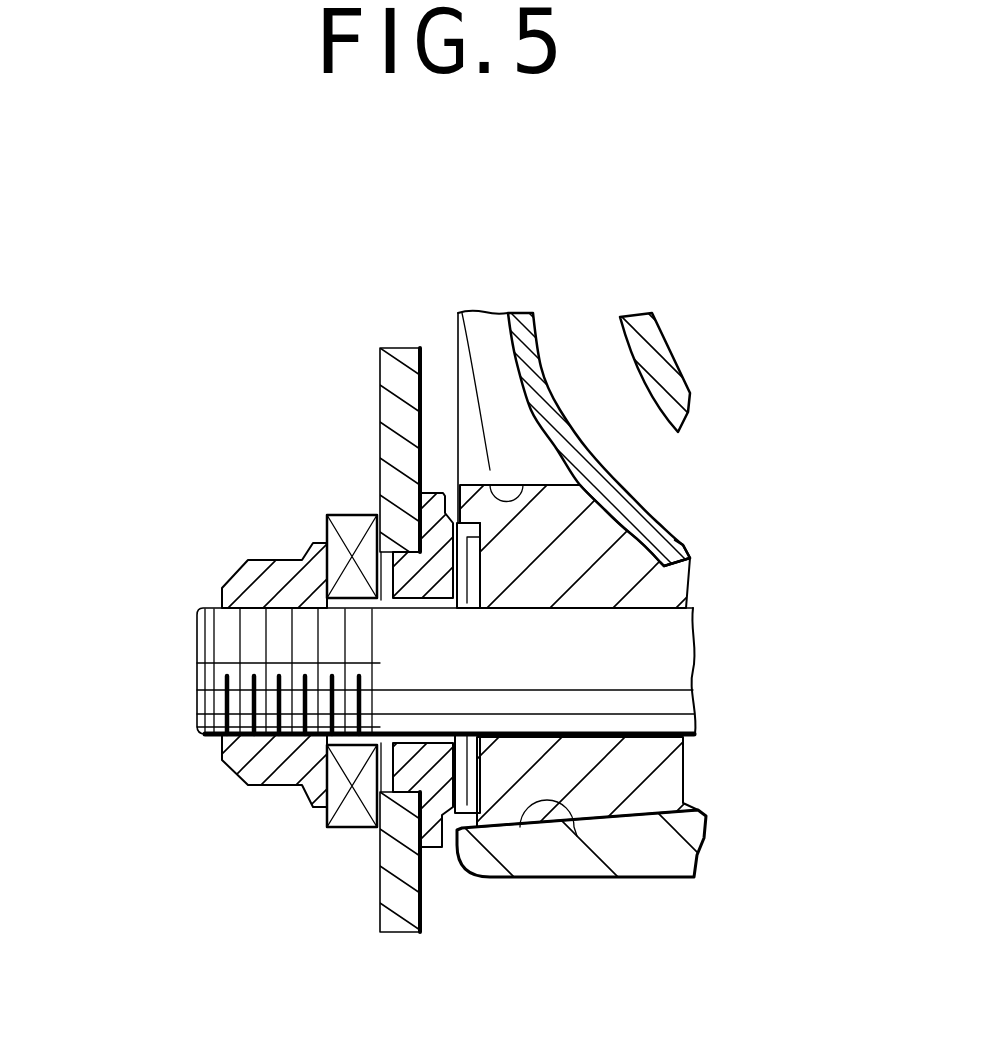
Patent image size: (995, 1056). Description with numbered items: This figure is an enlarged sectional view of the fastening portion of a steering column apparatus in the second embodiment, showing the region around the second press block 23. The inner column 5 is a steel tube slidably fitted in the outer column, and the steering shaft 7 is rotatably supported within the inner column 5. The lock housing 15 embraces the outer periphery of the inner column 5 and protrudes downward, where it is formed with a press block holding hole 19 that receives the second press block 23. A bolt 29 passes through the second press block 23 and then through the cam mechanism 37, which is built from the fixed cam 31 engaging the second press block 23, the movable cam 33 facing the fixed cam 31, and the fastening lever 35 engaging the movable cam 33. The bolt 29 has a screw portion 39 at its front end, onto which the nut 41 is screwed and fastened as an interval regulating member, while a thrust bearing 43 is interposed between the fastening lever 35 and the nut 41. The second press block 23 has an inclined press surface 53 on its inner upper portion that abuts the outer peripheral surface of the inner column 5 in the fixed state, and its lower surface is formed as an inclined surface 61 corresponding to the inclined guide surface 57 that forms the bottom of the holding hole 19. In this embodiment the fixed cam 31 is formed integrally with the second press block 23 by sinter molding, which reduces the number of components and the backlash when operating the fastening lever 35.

The inner column 5 is at (652, 512).
The steering shaft 7 is at (660, 365).
The lock housing 15 is at (493, 363).
The press block holding hole 19 is at (458, 313).
The second press block 23 is at (645, 772).
The bolt 29 is at (667, 660).
The fixed cam 31 is at (452, 822).
The movable cam 33 is at (430, 765).
The fastening lever 35 is at (378, 905).
The cam mechanism 37 is at (228, 900).
The screw portion 39 is at (258, 653).
The nut 41 is at (243, 580).
The thrust bearing 43 is at (352, 530).
The inclined press surface 53 is at (670, 531).
The inclined guide surface 57 is at (576, 833).
The inclined surface 61 is at (618, 830).